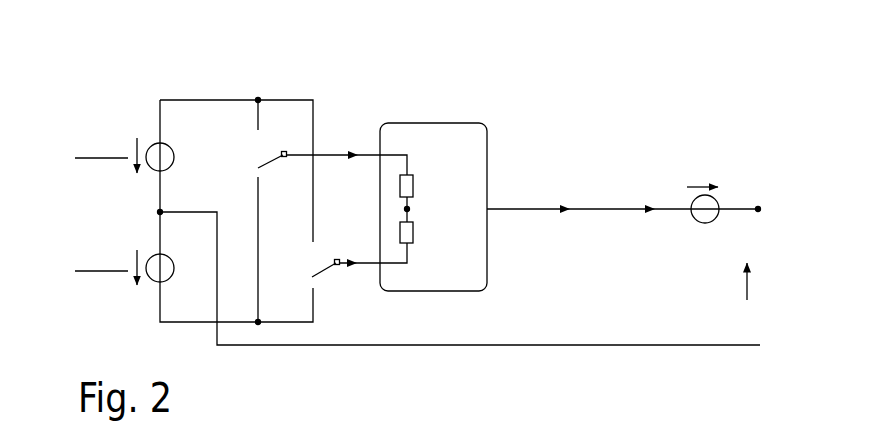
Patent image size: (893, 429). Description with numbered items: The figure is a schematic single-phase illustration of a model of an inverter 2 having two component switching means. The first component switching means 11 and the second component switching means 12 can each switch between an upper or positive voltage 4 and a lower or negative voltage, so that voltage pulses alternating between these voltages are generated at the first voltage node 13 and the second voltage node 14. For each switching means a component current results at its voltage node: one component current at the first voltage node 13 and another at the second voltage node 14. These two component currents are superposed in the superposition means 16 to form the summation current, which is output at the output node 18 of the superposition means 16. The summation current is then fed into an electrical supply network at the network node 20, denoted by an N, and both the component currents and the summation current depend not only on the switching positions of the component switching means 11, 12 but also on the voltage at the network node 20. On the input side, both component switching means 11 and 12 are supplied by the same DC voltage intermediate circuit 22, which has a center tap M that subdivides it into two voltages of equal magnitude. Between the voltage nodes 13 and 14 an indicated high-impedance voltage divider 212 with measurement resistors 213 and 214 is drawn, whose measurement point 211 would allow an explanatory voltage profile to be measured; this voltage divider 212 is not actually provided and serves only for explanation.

The inverter 2 is at (579, 58).
The upper voltage 4 is at (233, 92).
The first component switching means 11 is at (354, 108).
The second component switching means 12 is at (343, 290).
The first voltage node 13 is at (380, 155).
The second voltage node 14 is at (385, 268).
The superposition means 16 is at (457, 106).
The output node 18 is at (495, 198).
The network node 20 is at (757, 197).
The DC voltage intermediate circuit 22 is at (67, 150).
The measurement point 211 is at (410, 209).
The high-impedance voltage divider 212 is at (462, 157).
The measurement resistor 213 is at (413, 184).
The measurement resistor 214 is at (413, 237).